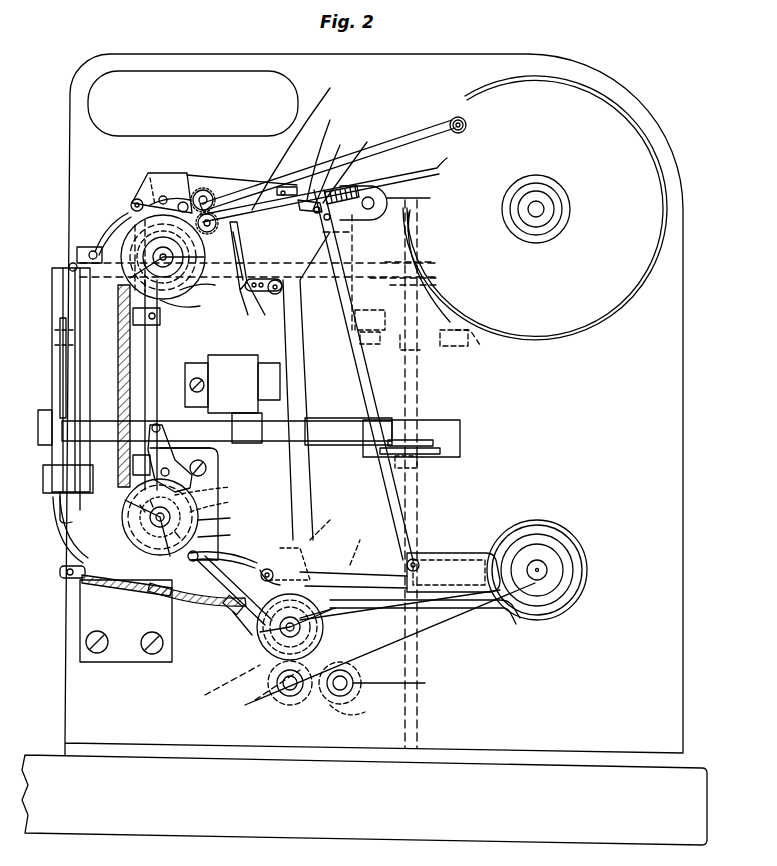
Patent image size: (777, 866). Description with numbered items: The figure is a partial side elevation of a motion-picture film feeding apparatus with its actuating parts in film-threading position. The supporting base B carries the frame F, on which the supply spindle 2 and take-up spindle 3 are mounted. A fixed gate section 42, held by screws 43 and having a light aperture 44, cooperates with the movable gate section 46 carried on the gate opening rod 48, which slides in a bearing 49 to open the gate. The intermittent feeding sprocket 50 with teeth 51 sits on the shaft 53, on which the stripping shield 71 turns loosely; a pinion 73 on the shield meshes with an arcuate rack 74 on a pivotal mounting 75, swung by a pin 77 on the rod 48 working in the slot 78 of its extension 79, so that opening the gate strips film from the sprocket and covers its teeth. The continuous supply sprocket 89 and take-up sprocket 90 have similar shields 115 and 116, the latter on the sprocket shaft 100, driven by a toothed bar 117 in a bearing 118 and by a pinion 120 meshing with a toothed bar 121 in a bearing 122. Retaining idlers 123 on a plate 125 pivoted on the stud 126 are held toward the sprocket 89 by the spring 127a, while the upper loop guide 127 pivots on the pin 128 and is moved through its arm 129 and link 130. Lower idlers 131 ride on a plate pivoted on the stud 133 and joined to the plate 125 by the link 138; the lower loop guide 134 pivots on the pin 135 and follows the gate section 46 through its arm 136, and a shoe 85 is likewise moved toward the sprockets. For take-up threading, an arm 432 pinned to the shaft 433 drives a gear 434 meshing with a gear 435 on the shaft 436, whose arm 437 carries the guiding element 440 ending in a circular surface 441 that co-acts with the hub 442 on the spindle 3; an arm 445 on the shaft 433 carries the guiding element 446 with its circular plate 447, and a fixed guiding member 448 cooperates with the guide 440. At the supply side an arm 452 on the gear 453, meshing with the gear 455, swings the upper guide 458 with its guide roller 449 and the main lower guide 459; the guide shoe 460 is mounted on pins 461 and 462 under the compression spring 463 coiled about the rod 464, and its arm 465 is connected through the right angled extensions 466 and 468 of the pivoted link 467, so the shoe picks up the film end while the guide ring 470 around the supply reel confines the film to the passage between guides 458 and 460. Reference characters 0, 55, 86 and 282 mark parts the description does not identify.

The supply spindle 2 is at (546, 211).
The take-up spindle 3 is at (548, 570).
The block 0 is at (262, 357).
The gate section 42 is at (121, 235).
The screws 43 is at (75, 483).
The aperture 44 is at (120, 385).
The movable gate section 46 is at (66, 452).
The gate opening rod 48 is at (330, 430).
The bearing 49 is at (262, 425).
The feeding sprocket 50 is at (228, 535).
The film engaging teeth 51 is at (228, 518).
The sprocket shaft 53 is at (140, 512).
The shaft housing 55 is at (118, 350).
The stripping and guiding and protecting shield 71 is at (122, 537).
The pinion 73 is at (224, 501).
The arcuate rack 74 is at (216, 484).
The pivotal mounting 75 is at (222, 462).
The pin 77 is at (170, 443).
The slot 78 is at (158, 422).
The extension 79 is at (196, 446).
The shoe 85 is at (60, 570).
The cable 86 is at (54, 520).
The supply sprocket 89 is at (202, 288).
The take-up sprocket 90 is at (323, 628).
The sprocket shaft 100 is at (334, 610).
The stripping and protective shield 115 is at (170, 195).
The stripping and protective shield 116 is at (190, 265).
The toothed bar 117 is at (196, 306).
The bearing 118 is at (133, 462).
The pinion 120 is at (170, 638).
The toothed bar 121 is at (215, 580).
The bearing 122 is at (250, 640).
The rollers or idlers 123 is at (137, 199).
The plate 125 is at (212, 180).
The stud 126 is at (414, 212).
The curved plate 127 is at (112, 230).
The spring 127a is at (455, 348).
The pin 128 is at (84, 252).
The arm 129 is at (72, 262).
The link 130 is at (352, 272).
The rollers or idlers 131 is at (318, 592).
The stud 133 is at (492, 572).
The curved plate 134 is at (268, 566).
The pin 135 is at (240, 560).
The arm 136 is at (197, 594).
The link 138 is at (352, 390).
The block 282 is at (200, 363).
The arm 432 is at (339, 697).
The shaft 433 is at (260, 698).
The gear 434 is at (290, 698).
The gear 435 is at (361, 722).
The shaft 436 is at (408, 682).
The upwardly extending arm 437 is at (420, 630).
The guiding element 440 is at (490, 545).
The circular surface 441 is at (567, 532).
The hub 442 is at (580, 587).
The arm 445 is at (432, 620).
The guiding element 446 is at (498, 612).
The circular plate 447 is at (572, 600).
The guiding member 448 is at (345, 540).
The guide roller 449 is at (450, 122).
The arm 452 is at (238, 236).
The gear 453 is at (240, 252).
The gear 455 is at (210, 196).
The upper guide 458 is at (298, 182).
The main lower guide 459 is at (306, 141).
The guide shoe 460 is at (447, 168).
The pin 461 is at (401, 203).
The pin 462 is at (358, 163).
The compression spring 463 is at (345, 208).
The rod 464 is at (336, 151).
The arm 465 is at (333, 172).
The upper right angled extension 466 is at (300, 218).
The pivotally mounted link 467 is at (283, 292).
The lower right angled extension 468 is at (280, 300).
The guide 470 is at (575, 336).
The supporting frame F is at (374, 404).
The supporting base B is at (364, 800).